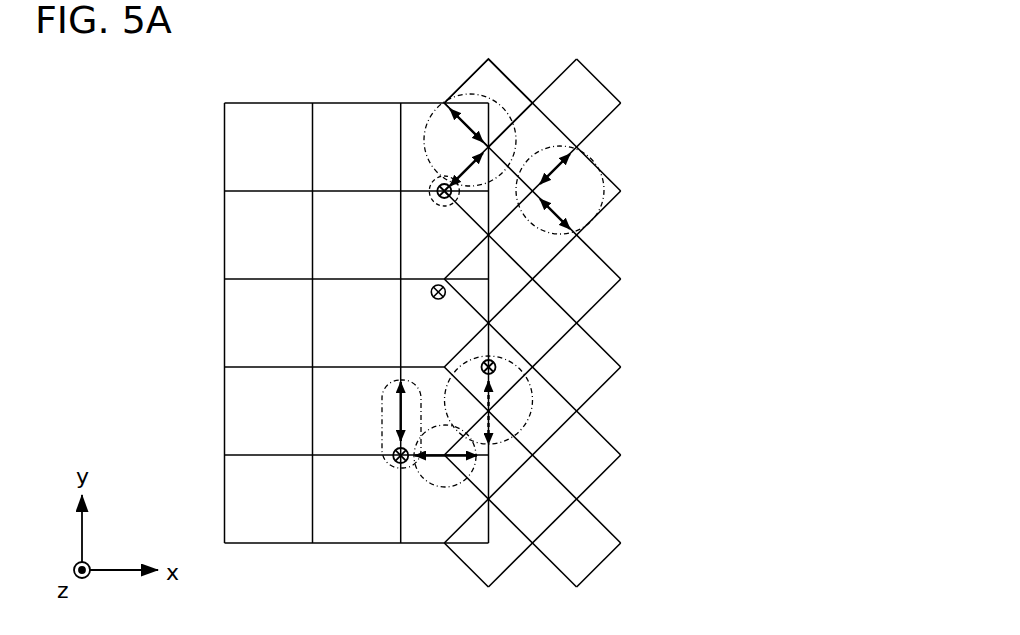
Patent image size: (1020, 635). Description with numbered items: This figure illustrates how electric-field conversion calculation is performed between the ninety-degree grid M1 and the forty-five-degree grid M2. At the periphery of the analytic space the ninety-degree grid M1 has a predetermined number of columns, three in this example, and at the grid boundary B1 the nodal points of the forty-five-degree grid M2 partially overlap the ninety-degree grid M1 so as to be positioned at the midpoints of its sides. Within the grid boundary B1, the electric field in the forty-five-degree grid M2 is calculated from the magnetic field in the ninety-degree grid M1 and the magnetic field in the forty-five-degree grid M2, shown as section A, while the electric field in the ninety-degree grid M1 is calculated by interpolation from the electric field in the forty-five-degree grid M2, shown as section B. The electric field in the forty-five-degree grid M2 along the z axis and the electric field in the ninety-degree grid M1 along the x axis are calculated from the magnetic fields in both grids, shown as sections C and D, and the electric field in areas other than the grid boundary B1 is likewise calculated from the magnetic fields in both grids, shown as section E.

The 90-degree grid M1 is at (347, 306).
The 45-degree grid M2 is at (545, 497).
The grid boundary B1 is at (465, 73).
The section A is at (433, 118).
The section B is at (532, 397).
The section C is at (434, 182).
The section D is at (422, 480).
The section E is at (600, 180).